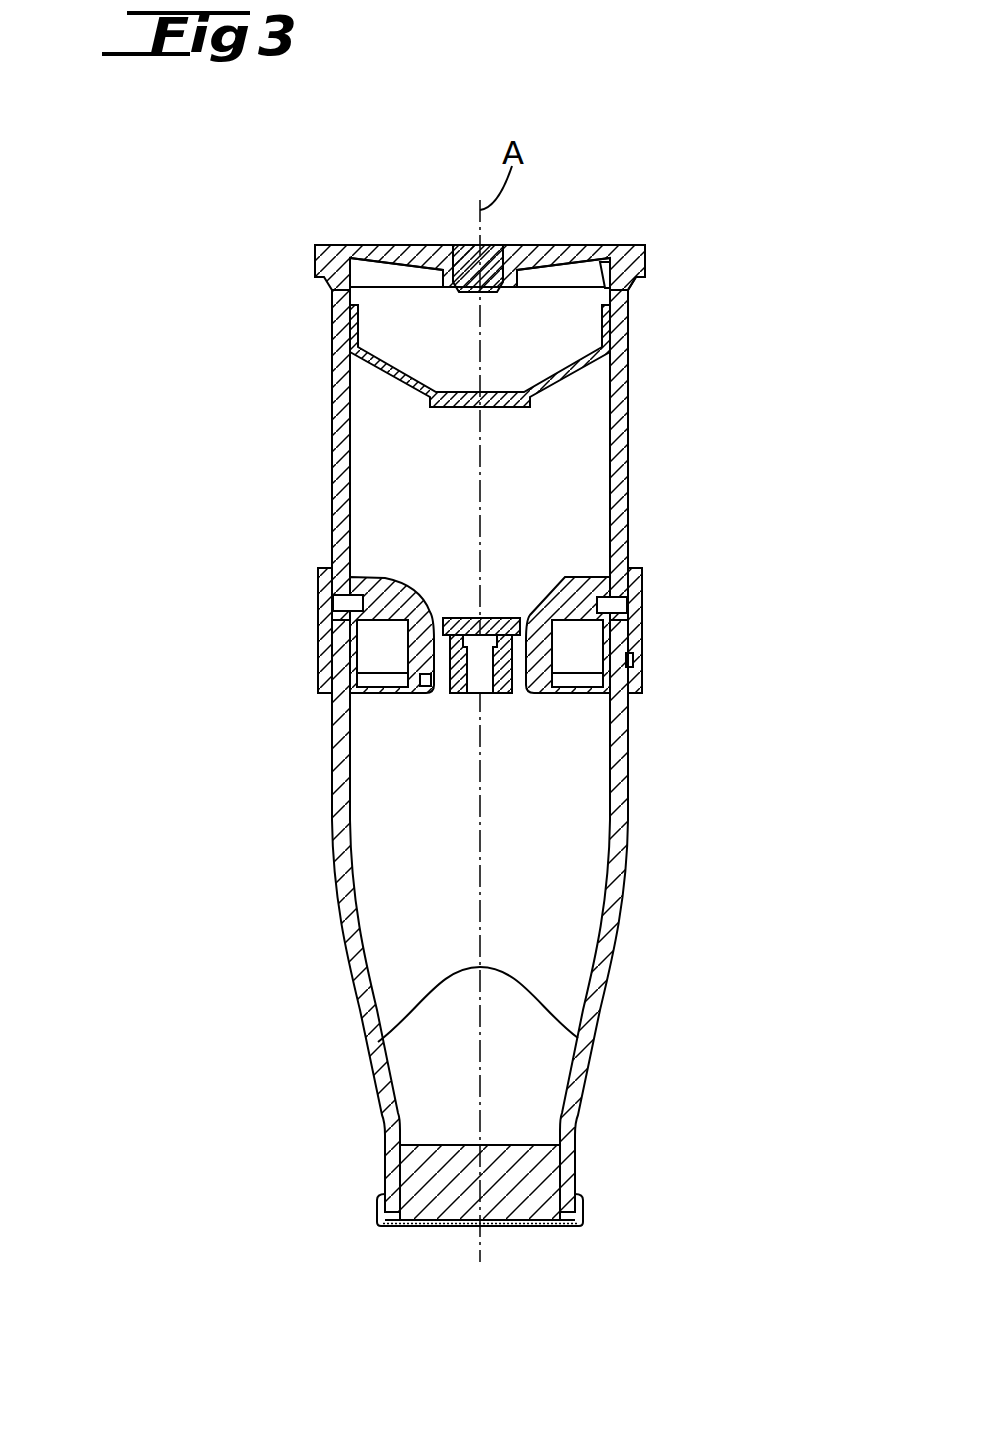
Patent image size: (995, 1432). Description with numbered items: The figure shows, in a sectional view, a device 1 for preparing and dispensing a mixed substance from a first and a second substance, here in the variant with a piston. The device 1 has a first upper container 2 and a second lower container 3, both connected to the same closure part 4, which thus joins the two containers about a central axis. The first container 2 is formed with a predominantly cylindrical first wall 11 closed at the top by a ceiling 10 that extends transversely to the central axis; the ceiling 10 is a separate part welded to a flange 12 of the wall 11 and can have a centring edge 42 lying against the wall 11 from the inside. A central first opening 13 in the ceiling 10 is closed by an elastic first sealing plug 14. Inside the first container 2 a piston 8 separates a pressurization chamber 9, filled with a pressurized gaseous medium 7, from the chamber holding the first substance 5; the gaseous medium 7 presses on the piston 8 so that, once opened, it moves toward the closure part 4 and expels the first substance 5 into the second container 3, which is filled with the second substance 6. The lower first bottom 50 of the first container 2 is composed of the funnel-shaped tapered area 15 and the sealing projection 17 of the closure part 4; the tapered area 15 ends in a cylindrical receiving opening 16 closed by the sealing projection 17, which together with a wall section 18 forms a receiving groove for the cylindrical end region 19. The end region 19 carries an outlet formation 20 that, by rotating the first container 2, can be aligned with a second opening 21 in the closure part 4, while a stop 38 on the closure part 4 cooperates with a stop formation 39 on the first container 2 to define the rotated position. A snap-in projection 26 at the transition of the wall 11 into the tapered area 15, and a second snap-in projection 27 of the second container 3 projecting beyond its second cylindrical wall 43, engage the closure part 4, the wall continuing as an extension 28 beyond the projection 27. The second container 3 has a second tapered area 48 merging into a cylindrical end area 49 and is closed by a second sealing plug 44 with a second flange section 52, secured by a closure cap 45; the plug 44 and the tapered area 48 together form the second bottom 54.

The device 1 is at (150, 598).
The first upper container 2 is at (332, 432).
The second lower container 3 is at (362, 1030).
The closure part 4 is at (327, 627).
The first substance 5 is at (480, 434).
The second substance 6 is at (478, 1022).
The gaseous medium 7 is at (480, 320).
The piston 8 is at (350, 336).
The pressurization chamber 9 is at (397, 278).
The ceiling 10 is at (327, 248).
The first wall 11 is at (623, 360).
The flange 12 is at (643, 267).
The first opening 13 is at (505, 260).
The first sealing plug 14 is at (470, 260).
The tapered area 15 is at (405, 588).
The receiving opening 16 is at (412, 633).
The sealing projection 17 is at (522, 632).
The wall section 18 is at (408, 629).
The end region 19 is at (543, 658).
The outlet formation 20 is at (528, 665).
The second opening 21 is at (427, 689).
The snap-in projection 26 is at (628, 592).
The second snap-in projection 27 is at (632, 662).
The extension 28 is at (618, 640).
The stop 38 is at (367, 607).
The stop formation 39 is at (560, 600).
The centring edge 42 is at (608, 268).
The second cylindrical wall 43 is at (340, 823).
The second sealing plug 44 is at (428, 1187).
The closure cap 45 is at (585, 1224).
The second tapered area 48 is at (570, 1087).
The cylindrical end area 49 is at (390, 1180).
The first bottom 50 is at (553, 565).
The second flange section 52 is at (568, 1217).
The second bottom 54 is at (532, 1077).